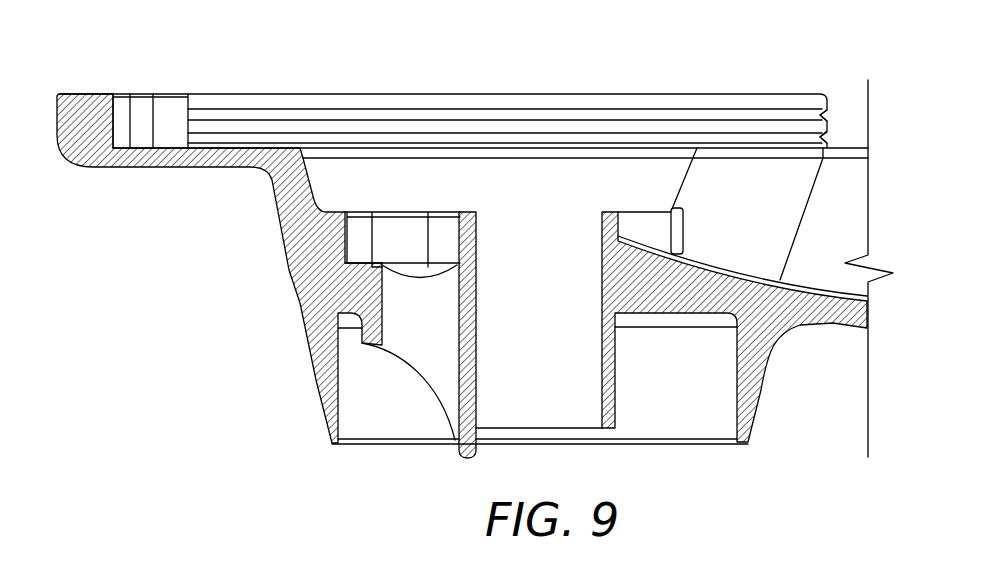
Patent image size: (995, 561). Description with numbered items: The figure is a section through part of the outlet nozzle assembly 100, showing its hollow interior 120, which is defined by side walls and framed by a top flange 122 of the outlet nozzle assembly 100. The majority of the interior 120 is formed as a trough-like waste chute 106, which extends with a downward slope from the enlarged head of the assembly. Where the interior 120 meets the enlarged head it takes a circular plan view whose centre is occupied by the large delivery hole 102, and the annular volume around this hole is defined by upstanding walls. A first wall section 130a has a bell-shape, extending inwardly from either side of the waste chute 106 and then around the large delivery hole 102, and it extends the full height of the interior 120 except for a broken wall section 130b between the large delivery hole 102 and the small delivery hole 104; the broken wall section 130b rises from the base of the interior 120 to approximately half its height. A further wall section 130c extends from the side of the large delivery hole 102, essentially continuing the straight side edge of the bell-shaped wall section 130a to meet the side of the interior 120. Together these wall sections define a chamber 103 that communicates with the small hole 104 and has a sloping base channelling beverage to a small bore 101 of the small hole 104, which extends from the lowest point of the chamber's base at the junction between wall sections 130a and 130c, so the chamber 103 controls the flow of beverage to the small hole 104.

The outlet nozzle assembly 100 is at (299, 401).
The small bore 101 is at (412, 350).
The large delivery hole 102 is at (538, 417).
The chamber 103 is at (362, 189).
The small delivery hole 104 is at (431, 411).
The waste chute 106 is at (848, 188).
The hollow interior 120 is at (787, 84).
The top flange 122 is at (825, 113).
The first wall section 130a is at (458, 230).
The broken wall section 130b is at (618, 227).
The further wall section 130c is at (383, 233).